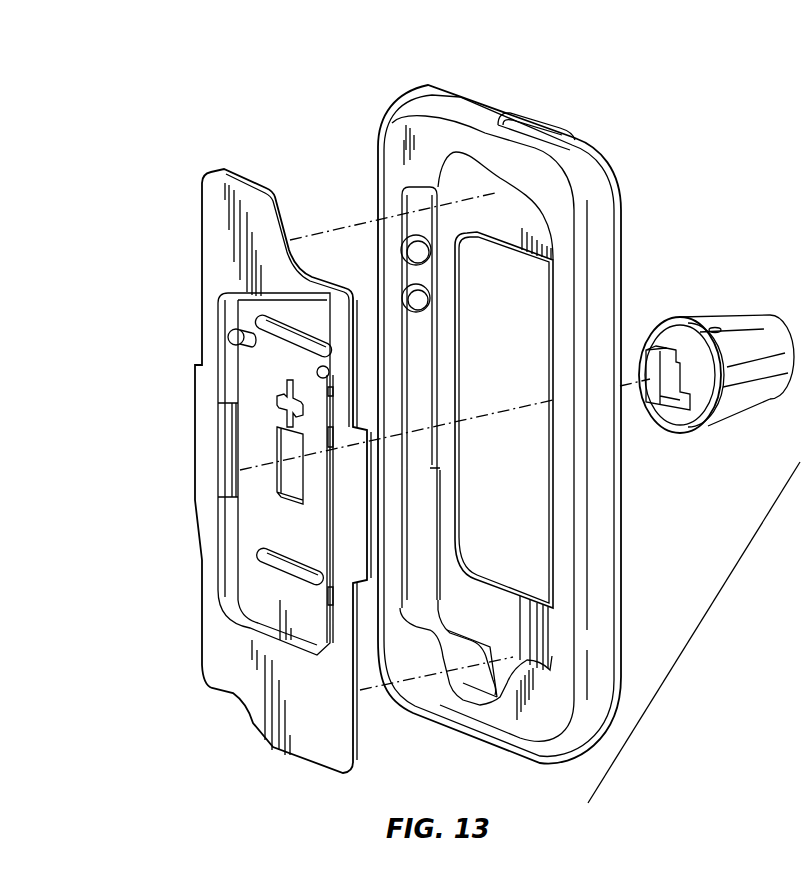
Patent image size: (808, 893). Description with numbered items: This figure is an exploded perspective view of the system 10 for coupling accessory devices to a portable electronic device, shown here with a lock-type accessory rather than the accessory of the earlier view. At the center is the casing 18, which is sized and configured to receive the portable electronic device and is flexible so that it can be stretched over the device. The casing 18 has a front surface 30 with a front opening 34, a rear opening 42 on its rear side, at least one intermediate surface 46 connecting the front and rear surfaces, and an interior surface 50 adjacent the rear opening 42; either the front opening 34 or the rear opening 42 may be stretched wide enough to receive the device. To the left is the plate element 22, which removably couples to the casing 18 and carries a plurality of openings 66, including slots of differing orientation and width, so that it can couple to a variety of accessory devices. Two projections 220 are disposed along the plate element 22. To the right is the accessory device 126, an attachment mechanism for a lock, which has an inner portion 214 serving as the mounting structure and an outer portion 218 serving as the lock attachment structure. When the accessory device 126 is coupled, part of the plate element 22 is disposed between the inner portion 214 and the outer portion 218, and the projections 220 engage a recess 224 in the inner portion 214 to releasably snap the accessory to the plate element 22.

The system 10 is at (262, 143).
The plate element 22 is at (283, 222).
The projections 220 is at (302, 402).
The openings 66 is at (222, 640).
The front surface 30 is at (392, 136).
The casing 18 is at (605, 150).
The front opening 34 is at (420, 190).
The intermediate surface 46 is at (463, 102).
The interior surface 50 is at (473, 172).
The rear opening 42 is at (523, 277).
The accessory device 126 is at (716, 368).
The inner portion 214 is at (648, 352).
The recess 224 is at (665, 382).
The outer portion 218 is at (710, 425).